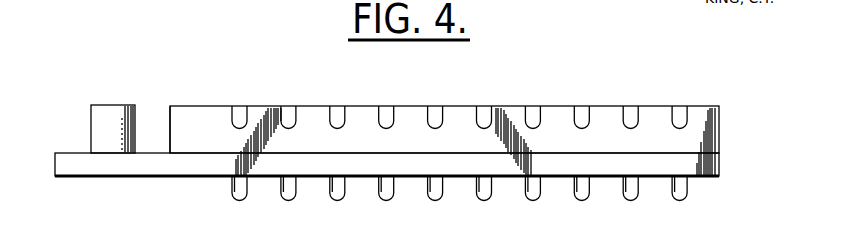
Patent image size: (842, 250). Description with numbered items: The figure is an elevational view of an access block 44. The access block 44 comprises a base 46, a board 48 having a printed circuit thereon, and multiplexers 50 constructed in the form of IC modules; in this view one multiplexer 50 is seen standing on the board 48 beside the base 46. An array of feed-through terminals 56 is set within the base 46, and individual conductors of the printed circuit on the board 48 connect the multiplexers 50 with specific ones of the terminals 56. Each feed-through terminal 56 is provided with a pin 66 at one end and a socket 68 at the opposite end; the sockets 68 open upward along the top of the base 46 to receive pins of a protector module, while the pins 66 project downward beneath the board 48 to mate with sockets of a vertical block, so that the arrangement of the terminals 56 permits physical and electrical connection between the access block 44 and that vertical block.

The access block 44 is at (433, 100).
The base 46 is at (170, 117).
The board 48 is at (118, 167).
The multiplexer 50 is at (102, 105).
The feed-through terminal 56 is at (625, 203).
The pin 66 is at (428, 190).
The socket 68 is at (582, 112).